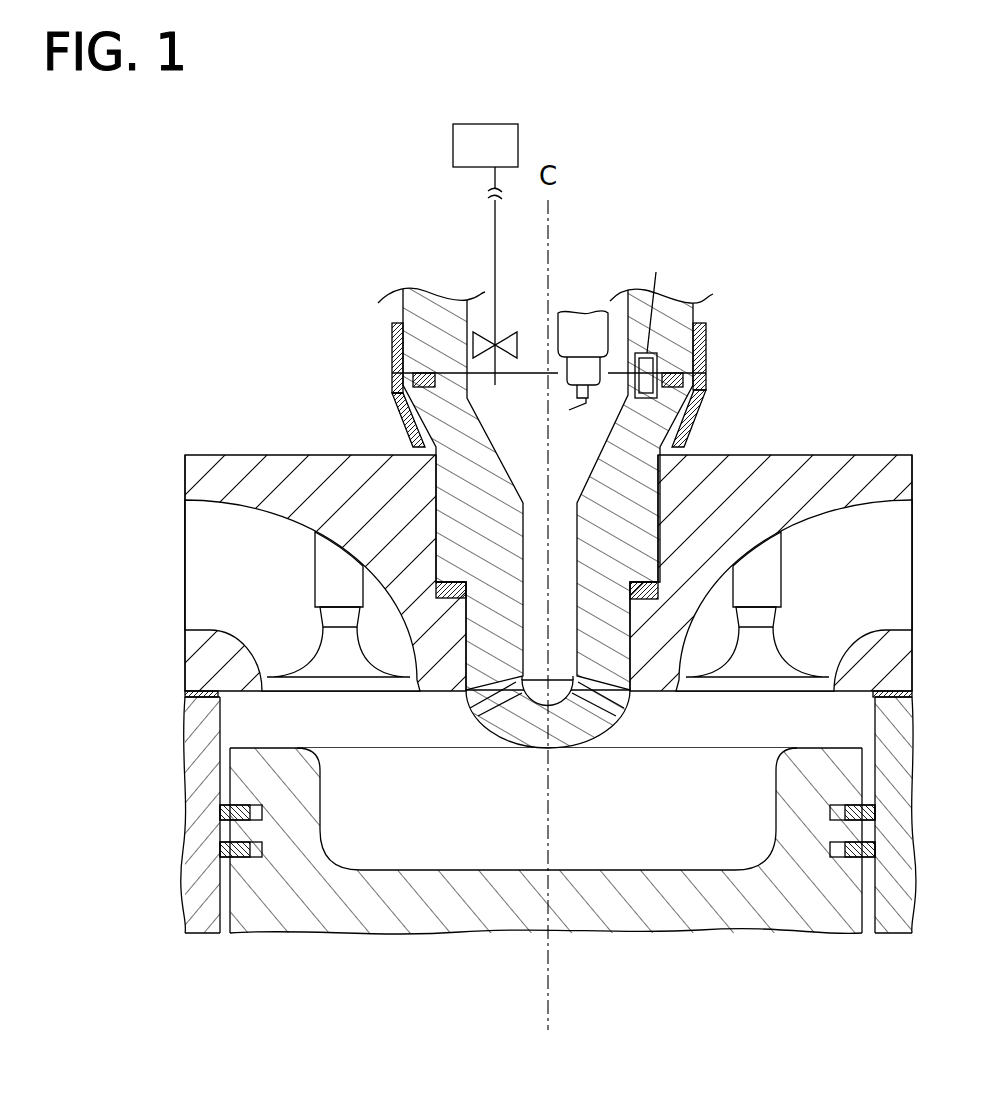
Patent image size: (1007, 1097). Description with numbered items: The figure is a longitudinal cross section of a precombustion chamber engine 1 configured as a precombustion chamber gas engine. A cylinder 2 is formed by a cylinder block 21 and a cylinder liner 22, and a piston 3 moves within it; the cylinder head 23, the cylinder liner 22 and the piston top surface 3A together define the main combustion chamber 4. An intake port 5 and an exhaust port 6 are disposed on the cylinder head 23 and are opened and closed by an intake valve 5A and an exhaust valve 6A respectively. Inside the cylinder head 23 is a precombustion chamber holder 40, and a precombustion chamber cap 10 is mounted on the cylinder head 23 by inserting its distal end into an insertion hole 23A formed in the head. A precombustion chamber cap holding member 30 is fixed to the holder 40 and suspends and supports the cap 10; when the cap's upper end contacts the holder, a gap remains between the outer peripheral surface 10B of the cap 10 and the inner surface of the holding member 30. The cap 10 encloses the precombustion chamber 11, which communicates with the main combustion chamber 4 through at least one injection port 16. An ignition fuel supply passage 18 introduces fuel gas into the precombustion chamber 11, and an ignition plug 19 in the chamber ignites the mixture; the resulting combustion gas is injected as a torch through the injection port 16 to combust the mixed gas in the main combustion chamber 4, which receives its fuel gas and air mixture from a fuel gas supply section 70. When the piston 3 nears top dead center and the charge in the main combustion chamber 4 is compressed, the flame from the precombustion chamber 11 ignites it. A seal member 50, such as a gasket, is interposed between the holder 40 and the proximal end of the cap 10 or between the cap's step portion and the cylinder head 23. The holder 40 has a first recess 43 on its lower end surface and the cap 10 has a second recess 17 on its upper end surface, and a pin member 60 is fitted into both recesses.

The precombustion chamber engine 1 is at (702, 98).
The cylinder 2 is at (491, 792).
The piston 3 is at (547, 872).
The piston top surface 3A is at (370, 870).
The main combustion chamber 4 is at (257, 722).
The intake port 5 is at (195, 573).
The intake valve 5A is at (312, 655).
The exhaust port 6 is at (895, 578).
The exhaust valve 6A is at (780, 652).
The precombustion chamber cap 10 is at (398, 420).
The outer peripheral surface 10B is at (404, 392).
The precombustion chamber 11 is at (580, 466).
The injection port 16 is at (470, 714).
The second recess 17 is at (690, 405).
The ignition fuel supply passage 18 is at (495, 243).
The ignition plug 19 is at (583, 318).
The cylinder block 21 is at (200, 820).
The cylinder liner 22 is at (875, 716).
The cylinder head 23 is at (205, 667).
The insertion hole 23A is at (650, 525).
The precombustion chamber cap holding member 30 is at (392, 347).
The precombustion chamber holder 40 is at (517, 545).
The first recess 43 is at (655, 297).
The seal member 50 is at (413, 380).
The pin member 60 is at (650, 375).
The fuel gas supply section 70 is at (453, 152).